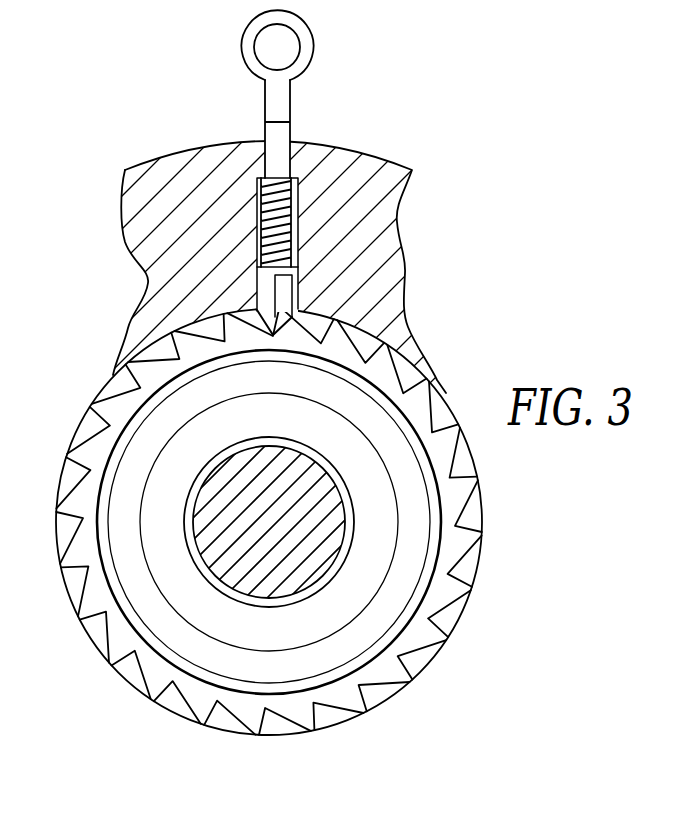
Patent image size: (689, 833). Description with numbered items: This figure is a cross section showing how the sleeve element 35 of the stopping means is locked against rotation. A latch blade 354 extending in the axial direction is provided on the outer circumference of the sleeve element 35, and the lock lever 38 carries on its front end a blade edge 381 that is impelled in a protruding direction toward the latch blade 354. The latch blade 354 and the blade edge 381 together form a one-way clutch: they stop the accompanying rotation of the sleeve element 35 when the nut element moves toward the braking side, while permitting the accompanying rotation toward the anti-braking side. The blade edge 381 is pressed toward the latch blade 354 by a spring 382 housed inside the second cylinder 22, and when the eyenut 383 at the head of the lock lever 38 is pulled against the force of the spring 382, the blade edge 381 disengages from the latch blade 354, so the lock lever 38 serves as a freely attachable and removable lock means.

The second cylinder 22 is at (137, 160).
The sleeve element 35 is at (97, 377).
The lock lever 38 is at (280, 172).
The latch blade 354 is at (300, 306).
The blade edge 381 is at (270, 330).
The spring 382 is at (286, 213).
The pull ring 383 is at (289, 44).